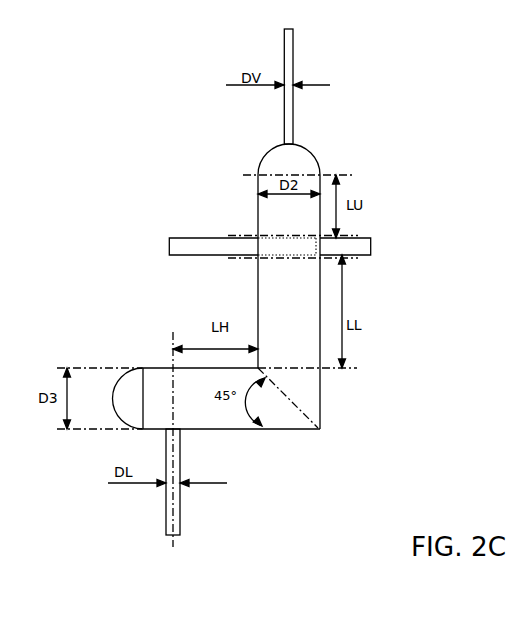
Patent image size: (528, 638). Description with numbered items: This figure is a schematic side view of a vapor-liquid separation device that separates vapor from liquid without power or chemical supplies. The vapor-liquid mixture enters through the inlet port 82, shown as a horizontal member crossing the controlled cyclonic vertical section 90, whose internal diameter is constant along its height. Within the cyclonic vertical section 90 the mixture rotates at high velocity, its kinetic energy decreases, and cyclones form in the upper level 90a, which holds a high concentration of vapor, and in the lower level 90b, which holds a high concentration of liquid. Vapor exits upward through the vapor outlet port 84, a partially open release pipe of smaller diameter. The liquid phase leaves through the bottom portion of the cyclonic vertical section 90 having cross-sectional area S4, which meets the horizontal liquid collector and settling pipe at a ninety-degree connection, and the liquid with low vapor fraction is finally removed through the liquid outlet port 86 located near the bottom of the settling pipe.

The inlet port 82 is at (160, 262).
The vapor outlet port 84 is at (293, 60).
The liquid outlet port 86 is at (180, 502).
The controlled cyclonic vertical section 90 is at (419, 170).
The upper level of the cyclonic vertical section 90a is at (372, 188).
The lower level of the cyclonic vertical section 90b is at (363, 342).
The cross-sectional area of the bottom portion of the cyclonic vertical section S4 is at (296, 368).